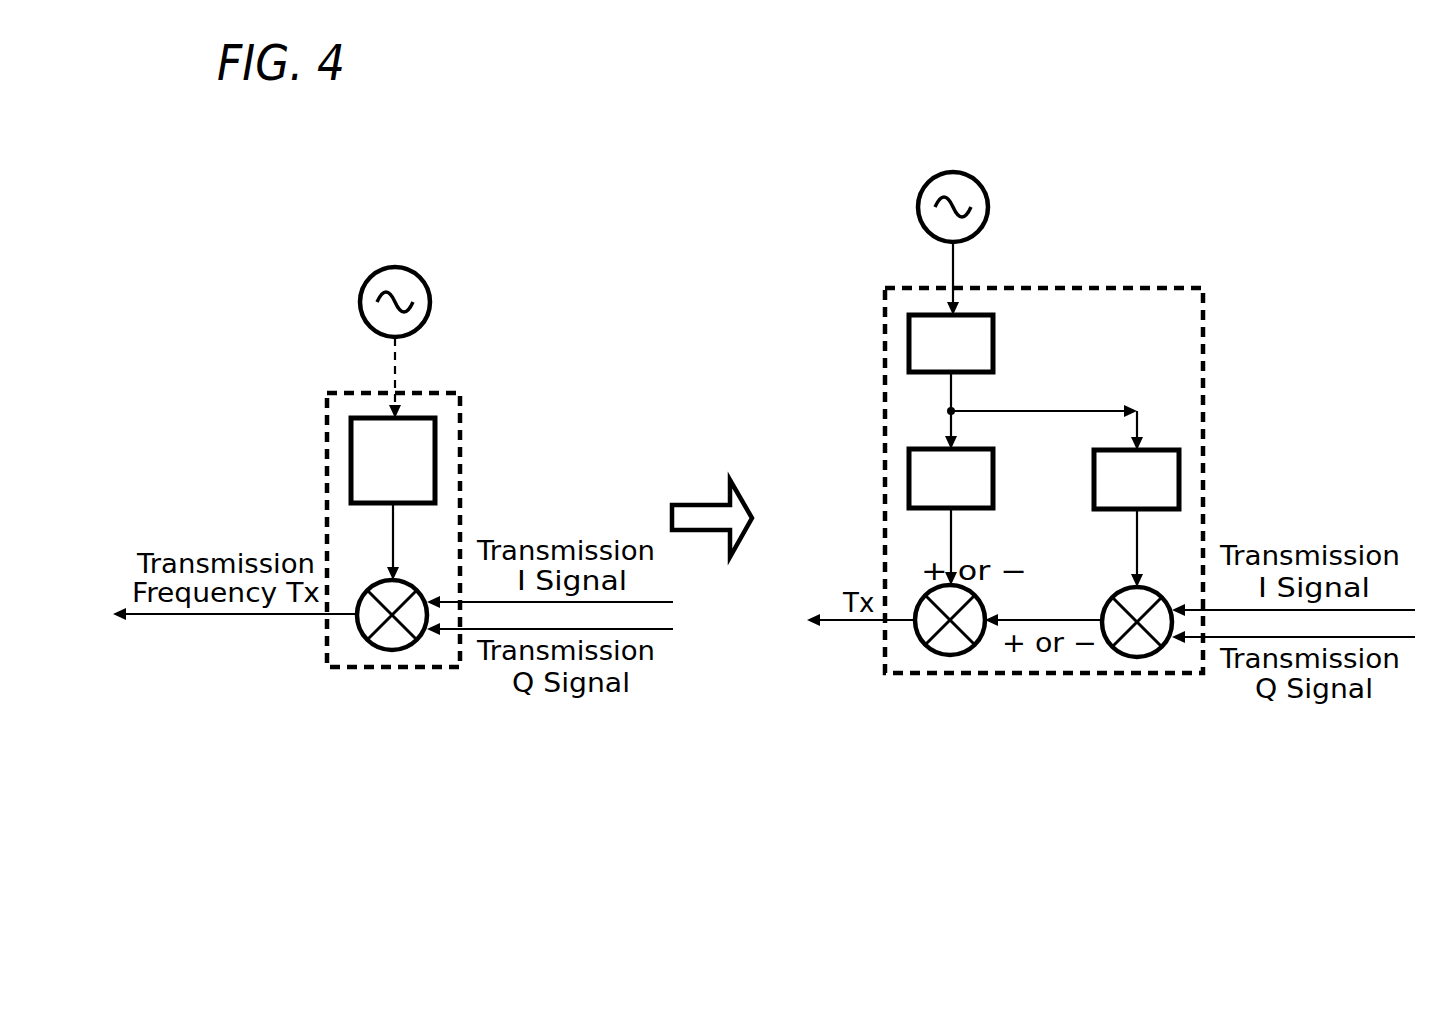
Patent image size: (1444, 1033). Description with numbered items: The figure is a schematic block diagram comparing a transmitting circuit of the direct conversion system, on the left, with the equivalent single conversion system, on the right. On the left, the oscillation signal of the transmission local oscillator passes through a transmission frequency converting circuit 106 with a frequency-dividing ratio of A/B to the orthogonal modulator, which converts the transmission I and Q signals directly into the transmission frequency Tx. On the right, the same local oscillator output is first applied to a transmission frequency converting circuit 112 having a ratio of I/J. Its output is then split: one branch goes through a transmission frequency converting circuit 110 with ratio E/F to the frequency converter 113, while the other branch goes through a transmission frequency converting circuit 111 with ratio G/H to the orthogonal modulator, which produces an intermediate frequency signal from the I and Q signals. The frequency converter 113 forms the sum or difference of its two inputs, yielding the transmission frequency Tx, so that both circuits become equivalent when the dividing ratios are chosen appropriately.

The transmission frequency converting circuit 106 is at (351, 461).
The transmission frequency converting circuit 110 is at (909, 480).
The transmission frequency converting circuit 111 is at (1179, 481).
The transmission frequency converting circuit 112 is at (909, 343).
The frequency converter 113 is at (948, 655).